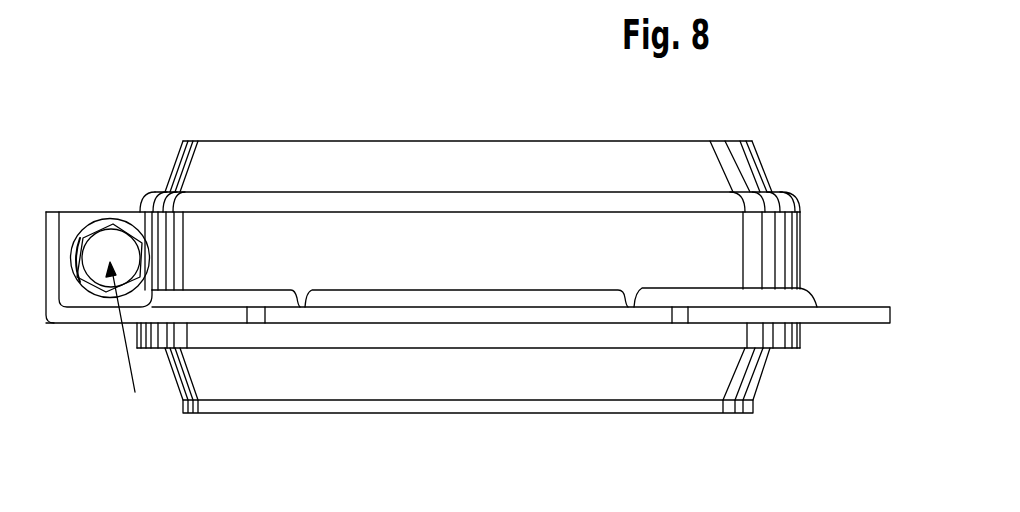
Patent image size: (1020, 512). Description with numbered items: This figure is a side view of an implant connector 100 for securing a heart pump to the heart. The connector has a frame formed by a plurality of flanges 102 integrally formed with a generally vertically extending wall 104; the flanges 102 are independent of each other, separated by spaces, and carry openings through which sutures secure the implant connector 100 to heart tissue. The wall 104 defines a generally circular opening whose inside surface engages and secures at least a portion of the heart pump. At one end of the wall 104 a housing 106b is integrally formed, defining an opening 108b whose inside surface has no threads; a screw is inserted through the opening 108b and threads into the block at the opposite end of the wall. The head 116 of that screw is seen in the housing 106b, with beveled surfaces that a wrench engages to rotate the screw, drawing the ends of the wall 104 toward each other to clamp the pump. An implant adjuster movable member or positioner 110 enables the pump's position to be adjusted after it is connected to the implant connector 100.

The implant connector 100 is at (377, 70).
The flange 102 is at (407, 315).
The vertically extending wall 104 is at (585, 260).
The housing 106b is at (83, 218).
The opening 108b is at (80, 283).
The implant adjuster movable member or positioner 110 is at (497, 141).
The head 116 is at (129, 339).